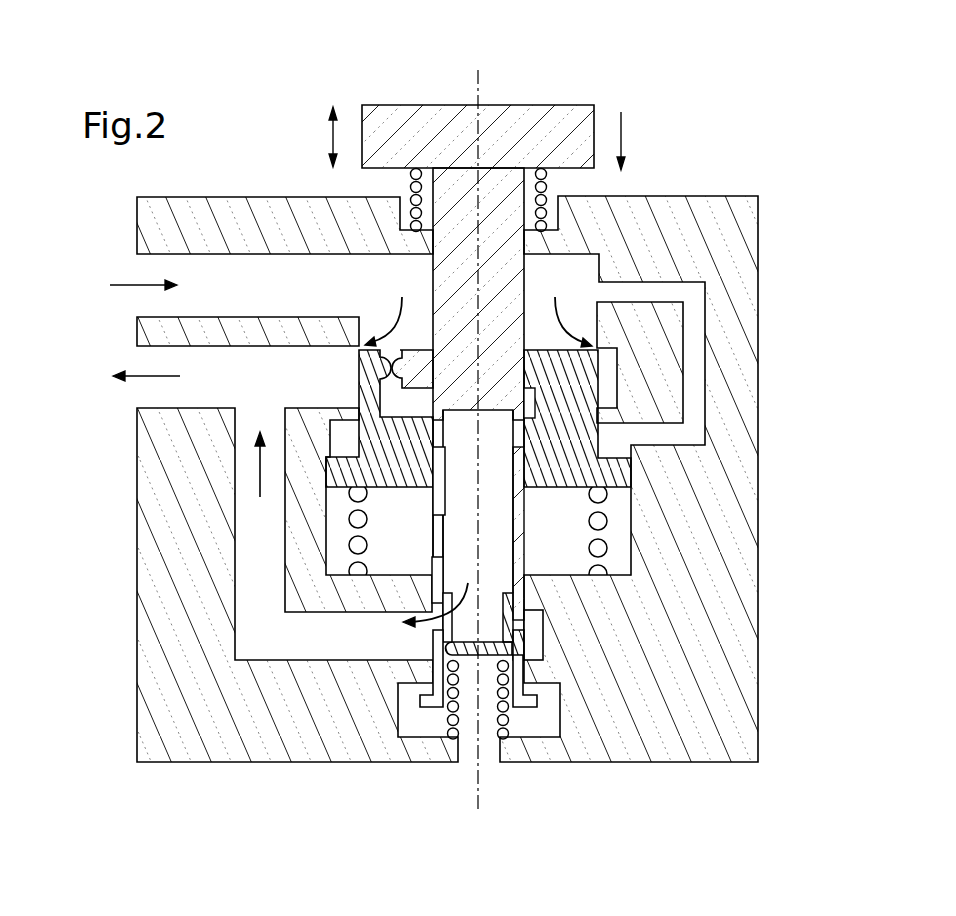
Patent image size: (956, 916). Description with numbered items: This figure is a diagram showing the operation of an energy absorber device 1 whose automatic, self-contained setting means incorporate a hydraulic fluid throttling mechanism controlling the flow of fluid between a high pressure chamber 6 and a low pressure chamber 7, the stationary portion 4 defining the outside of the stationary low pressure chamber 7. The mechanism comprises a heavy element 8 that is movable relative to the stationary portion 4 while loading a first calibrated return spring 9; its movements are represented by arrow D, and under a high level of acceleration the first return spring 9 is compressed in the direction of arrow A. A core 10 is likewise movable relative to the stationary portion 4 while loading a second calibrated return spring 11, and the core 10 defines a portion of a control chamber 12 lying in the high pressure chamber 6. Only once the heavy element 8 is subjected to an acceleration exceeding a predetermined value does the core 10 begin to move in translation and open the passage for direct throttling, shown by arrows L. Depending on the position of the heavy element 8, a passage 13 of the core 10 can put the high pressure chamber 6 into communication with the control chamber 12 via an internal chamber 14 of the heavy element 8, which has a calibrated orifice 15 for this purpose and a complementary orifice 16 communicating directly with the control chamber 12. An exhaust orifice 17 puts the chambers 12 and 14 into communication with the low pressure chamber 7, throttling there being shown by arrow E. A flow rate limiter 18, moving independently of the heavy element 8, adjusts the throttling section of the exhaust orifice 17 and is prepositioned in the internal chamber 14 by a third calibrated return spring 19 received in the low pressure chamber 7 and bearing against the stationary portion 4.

The energy absorber device 1 is at (757, 146).
The stationary portion 4 is at (732, 500).
The high pressure chamber 6 is at (246, 301).
The low pressure chamber 7 is at (252, 653).
The heavy element 8 is at (393, 105).
The first calibrated return spring 9 is at (554, 185).
The core 10 is at (546, 348).
The second calibrated return spring 11 is at (592, 557).
The control chamber 12 is at (415, 545).
The passage 13 is at (415, 417).
The internal chamber 14 is at (497, 563).
The calibrated orifice 15 is at (437, 430).
The complementary orifice 16 is at (440, 528).
The exhaust orifice 17 is at (442, 616).
The flow rate limiter 18 is at (490, 659).
The third calibrated return spring 19 is at (456, 722).